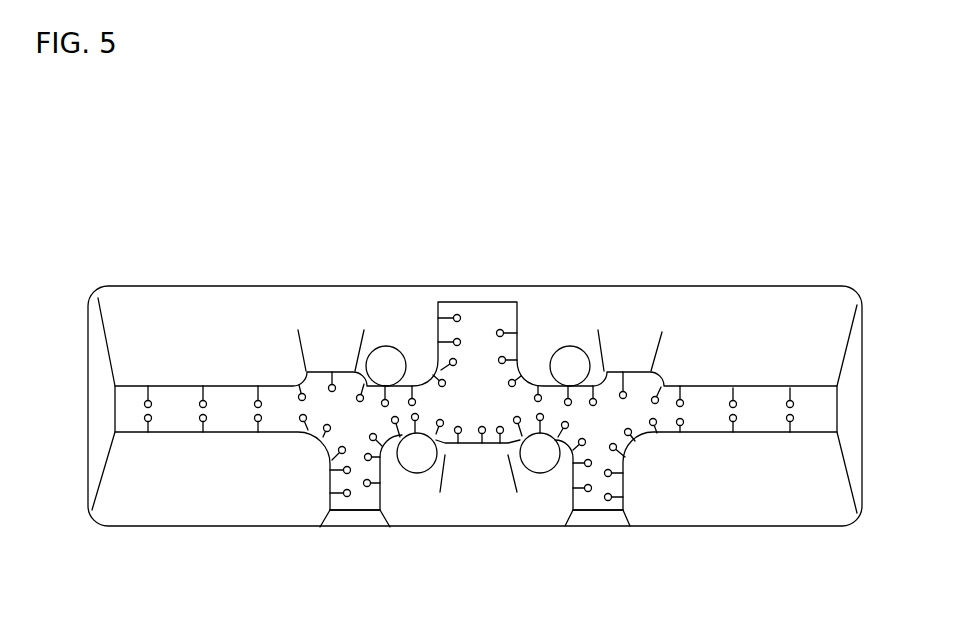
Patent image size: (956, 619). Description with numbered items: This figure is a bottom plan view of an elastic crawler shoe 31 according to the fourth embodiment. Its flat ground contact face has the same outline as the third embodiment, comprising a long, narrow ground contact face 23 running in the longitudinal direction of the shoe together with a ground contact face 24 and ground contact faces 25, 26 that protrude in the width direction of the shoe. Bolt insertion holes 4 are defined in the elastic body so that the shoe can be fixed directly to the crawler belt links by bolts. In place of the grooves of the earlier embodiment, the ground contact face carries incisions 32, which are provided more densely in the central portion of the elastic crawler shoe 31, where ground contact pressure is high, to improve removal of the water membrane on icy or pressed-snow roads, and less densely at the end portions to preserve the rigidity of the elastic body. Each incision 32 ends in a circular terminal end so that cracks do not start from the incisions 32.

The bolt insertion holes 4 is at (400, 347).
The ground contact face 23 is at (712, 420).
The ground contact face 24 is at (490, 312).
The ground contact face 25 is at (363, 500).
The ground contact face 26 is at (602, 503).
The elastic crawler shoe 31 is at (708, 275).
The incisions 32 is at (150, 432).